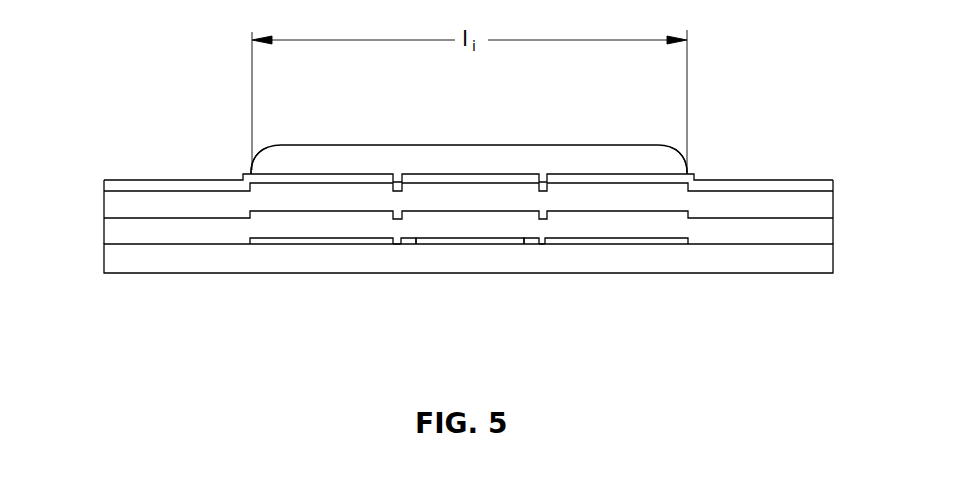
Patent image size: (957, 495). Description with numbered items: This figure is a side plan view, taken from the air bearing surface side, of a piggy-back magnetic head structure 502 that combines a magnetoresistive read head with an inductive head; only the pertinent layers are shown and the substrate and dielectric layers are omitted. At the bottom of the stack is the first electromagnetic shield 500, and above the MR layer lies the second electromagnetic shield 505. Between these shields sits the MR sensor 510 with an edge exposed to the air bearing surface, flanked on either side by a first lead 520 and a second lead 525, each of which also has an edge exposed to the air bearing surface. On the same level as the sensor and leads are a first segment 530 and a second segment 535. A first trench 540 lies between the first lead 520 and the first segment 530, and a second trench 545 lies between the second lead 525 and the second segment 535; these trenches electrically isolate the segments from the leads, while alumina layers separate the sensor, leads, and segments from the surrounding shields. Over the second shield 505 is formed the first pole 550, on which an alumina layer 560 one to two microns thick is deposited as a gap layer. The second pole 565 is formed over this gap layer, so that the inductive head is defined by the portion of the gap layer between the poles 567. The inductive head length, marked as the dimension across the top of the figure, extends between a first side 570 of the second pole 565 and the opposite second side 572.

The piggy-back magnetic head structure 502 is at (724, 76).
The first electromagnetic shield 500 is at (104, 259).
The second electromagnetic shield 505 is at (104, 232).
The first pole 550 is at (104, 204).
The alumina layer 560 is at (134, 182).
The second pole 565 is at (325, 157).
The portion of gap layer between first and second poles 567 is at (598, 177).
The first side of second pole 570 is at (250, 168).
The second side of second pole 572 is at (688, 166).
The first segment 530 is at (266, 245).
The first trench 540 is at (398, 245).
The first lead 520 is at (409, 245).
The MR sensor 510 is at (468, 245).
The second lead 525 is at (532, 245).
The second trench 545 is at (543, 245).
The second segment 535 is at (678, 245).